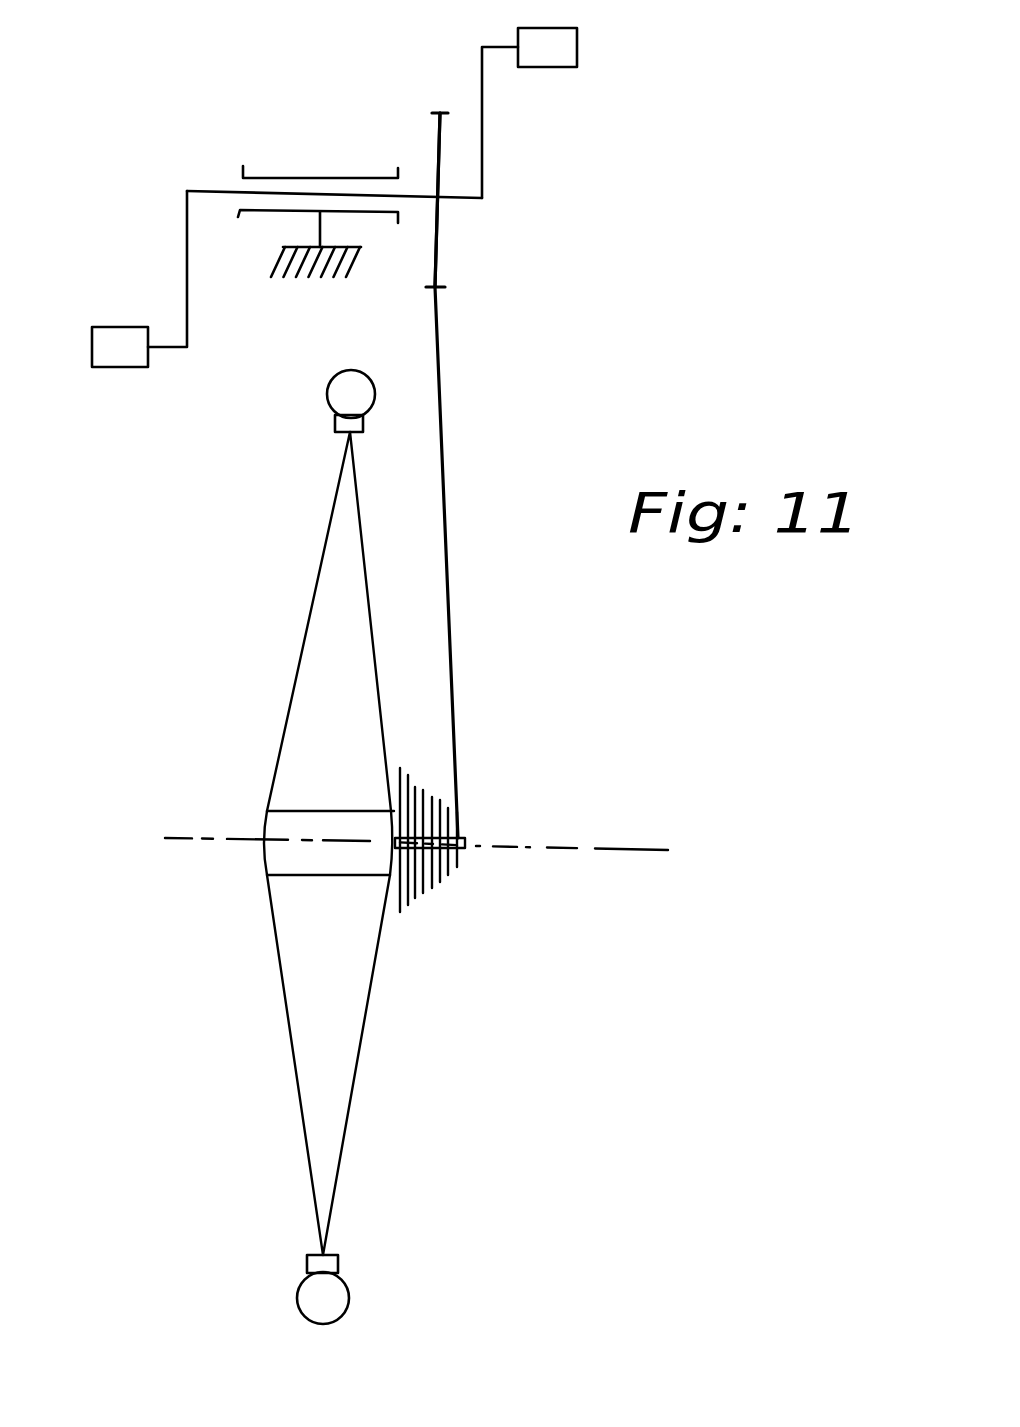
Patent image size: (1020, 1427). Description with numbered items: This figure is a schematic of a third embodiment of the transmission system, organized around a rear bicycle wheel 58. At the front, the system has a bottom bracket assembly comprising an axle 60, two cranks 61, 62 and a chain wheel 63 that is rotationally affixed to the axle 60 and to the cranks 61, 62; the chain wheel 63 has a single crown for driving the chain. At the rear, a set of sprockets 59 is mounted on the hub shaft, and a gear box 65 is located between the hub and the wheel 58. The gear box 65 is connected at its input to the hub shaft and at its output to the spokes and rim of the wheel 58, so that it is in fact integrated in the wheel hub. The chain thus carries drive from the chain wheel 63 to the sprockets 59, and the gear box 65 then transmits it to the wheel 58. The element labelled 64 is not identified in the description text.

The rear bicycle wheel 58 is at (347, 1142).
The set of sprockets 59 is at (437, 883).
The axle 60 is at (462, 202).
The crank 61 is at (483, 148).
The crank 62 is at (183, 280).
The chain wheel 63 is at (437, 267).
The slit carrier rod 64 is at (448, 570).
The gear box 65 is at (307, 858).